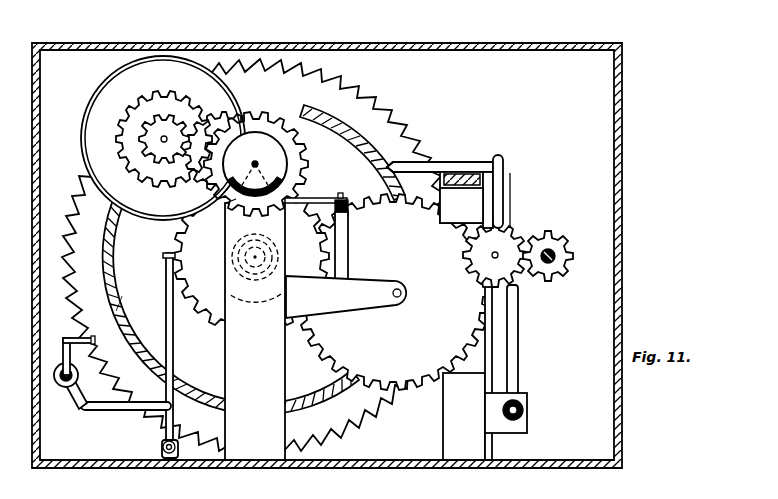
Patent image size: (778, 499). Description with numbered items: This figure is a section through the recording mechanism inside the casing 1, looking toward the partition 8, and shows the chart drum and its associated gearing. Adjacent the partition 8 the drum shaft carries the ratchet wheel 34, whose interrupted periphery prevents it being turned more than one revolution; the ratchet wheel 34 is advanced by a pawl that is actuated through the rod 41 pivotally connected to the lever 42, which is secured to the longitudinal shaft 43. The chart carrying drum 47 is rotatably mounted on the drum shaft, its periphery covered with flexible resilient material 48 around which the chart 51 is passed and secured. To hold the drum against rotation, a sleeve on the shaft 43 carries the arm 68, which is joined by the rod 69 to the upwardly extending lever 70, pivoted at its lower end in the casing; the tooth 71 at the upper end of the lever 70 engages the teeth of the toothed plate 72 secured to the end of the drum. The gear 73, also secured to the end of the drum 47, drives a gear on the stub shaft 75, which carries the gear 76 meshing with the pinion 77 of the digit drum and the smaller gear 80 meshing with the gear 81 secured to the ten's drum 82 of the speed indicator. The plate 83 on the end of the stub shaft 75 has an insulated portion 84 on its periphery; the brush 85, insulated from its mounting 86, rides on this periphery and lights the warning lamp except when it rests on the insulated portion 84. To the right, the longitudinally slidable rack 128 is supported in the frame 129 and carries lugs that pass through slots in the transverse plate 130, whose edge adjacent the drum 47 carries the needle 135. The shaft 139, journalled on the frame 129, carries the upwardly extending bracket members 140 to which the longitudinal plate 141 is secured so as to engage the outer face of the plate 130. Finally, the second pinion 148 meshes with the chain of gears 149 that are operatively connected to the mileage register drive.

The casing 1 is at (622, 206).
The partition 8 is at (517, 100).
The ratchet wheel 34 is at (368, 104).
The rod 41 is at (105, 332).
The lever 42 is at (62, 350).
The longitudinal shaft 43 is at (54, 377).
The chart carrying drum 47 is at (120, 249).
The flexible resilient material 48 is at (117, 311).
The chart 51 is at (113, 291).
The arm 68 is at (74, 404).
The rod 69 is at (118, 410).
The upwardly extending lever 70 is at (174, 350).
The tooth 71 is at (164, 261).
The toothed plate 72 is at (224, 287).
The gear 73 is at (218, 270).
The stub shaft 75 is at (255, 164).
The gear 76 is at (313, 167).
The pinion 77 is at (150, 141).
The smaller gear 80 is at (204, 192).
The gear 81 is at (156, 180).
The ten's drum 82 is at (187, 57).
The plate 83 is at (318, 172).
The insulated portion 84 is at (230, 200).
The brush 85 is at (332, 194).
The mounting 86 is at (342, 244).
The rack 128 is at (468, 174).
The frame 129 is at (468, 203).
The transverse plate 130 is at (445, 166).
The needle 135 is at (391, 165).
The shaft 139 is at (525, 408).
The bracket members 140 is at (518, 334).
The longitudinal plate 141 is at (500, 160).
The second pinion 148 is at (546, 236).
The chain of gears 149 is at (478, 298).